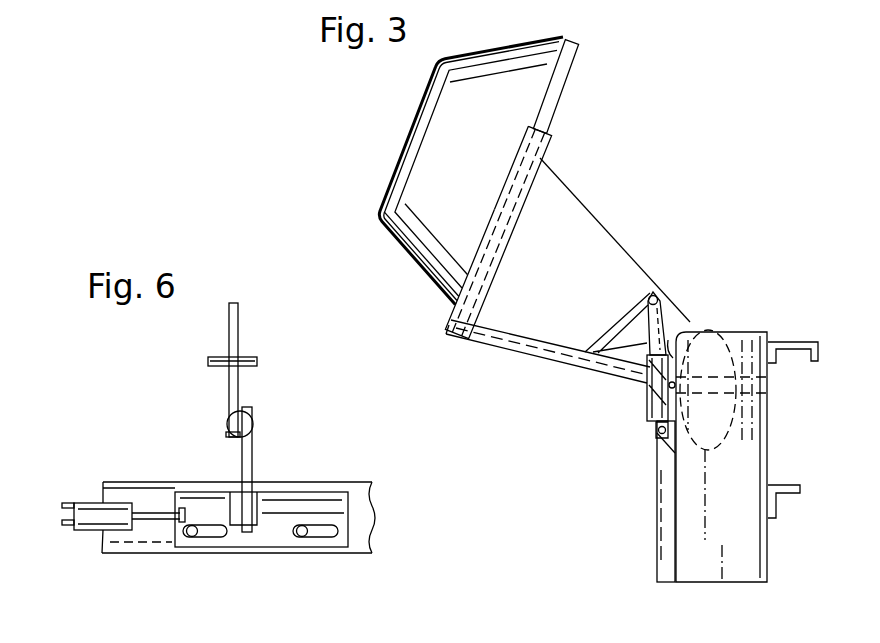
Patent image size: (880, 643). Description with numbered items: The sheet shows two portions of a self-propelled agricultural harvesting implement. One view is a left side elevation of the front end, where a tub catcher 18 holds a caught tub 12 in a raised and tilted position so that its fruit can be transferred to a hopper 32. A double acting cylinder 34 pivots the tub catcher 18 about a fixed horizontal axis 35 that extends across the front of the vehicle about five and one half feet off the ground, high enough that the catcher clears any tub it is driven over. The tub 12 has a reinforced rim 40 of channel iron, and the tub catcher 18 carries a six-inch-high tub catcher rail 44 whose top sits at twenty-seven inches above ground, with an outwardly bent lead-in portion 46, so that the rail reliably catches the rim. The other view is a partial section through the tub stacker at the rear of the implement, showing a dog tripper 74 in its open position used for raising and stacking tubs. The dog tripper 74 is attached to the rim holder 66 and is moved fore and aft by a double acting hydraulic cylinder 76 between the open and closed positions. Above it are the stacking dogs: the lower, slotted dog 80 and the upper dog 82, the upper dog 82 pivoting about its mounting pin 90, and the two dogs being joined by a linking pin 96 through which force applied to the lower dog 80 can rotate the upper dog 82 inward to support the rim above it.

In FIG. 3, the tub 12 is at (445, 108).
In FIG. 3, the reinforced rim 40 is at (565, 80).
In FIG. 3, the lead-in portion 46 is at (531, 158).
In FIG. 3, the tub catcher rail 44 is at (484, 262).
In FIG. 3, the tub catcher 18 is at (488, 359).
In FIG. 3, the fixed horizontal axis 35 is at (678, 360).
In FIG. 3, the double acting cylinder 34 is at (647, 398).
In FIG. 3, the hopper 32 is at (736, 442).
In FIG. 6, the rim holder 66 is at (160, 488).
In FIG. 6, the double acting hydraulic cylinder 76 is at (100, 500).
In FIG. 6, the dog tripper 74 is at (228, 497).
In FIG. 6, the upper dog 82 is at (238, 322).
In FIG. 6, the mounting pin 90 is at (248, 357).
In FIG. 6, the linking pin 96 is at (253, 414).
In FIG. 6, the lower slotted dog 80 is at (247, 462).